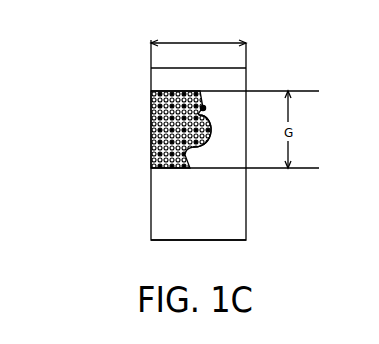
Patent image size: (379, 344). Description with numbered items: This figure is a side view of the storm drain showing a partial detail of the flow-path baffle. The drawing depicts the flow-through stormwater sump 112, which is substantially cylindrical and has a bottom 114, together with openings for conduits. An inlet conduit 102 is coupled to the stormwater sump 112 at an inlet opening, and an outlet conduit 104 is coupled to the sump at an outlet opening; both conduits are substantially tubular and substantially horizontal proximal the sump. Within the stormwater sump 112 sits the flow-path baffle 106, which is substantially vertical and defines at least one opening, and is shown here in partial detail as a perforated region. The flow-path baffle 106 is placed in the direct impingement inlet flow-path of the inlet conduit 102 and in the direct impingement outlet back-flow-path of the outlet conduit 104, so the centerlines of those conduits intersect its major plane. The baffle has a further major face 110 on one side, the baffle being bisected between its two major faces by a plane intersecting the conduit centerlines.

The inlet conduit 102 is at (203, 108).
The outlet conduit 104 is at (187, 135).
The flow-path baffle 106 is at (152, 121).
The further major face 110 is at (152, 103).
The flow-through stormwater sump 112 is at (150, 224).
The bottom 114 is at (203, 240).